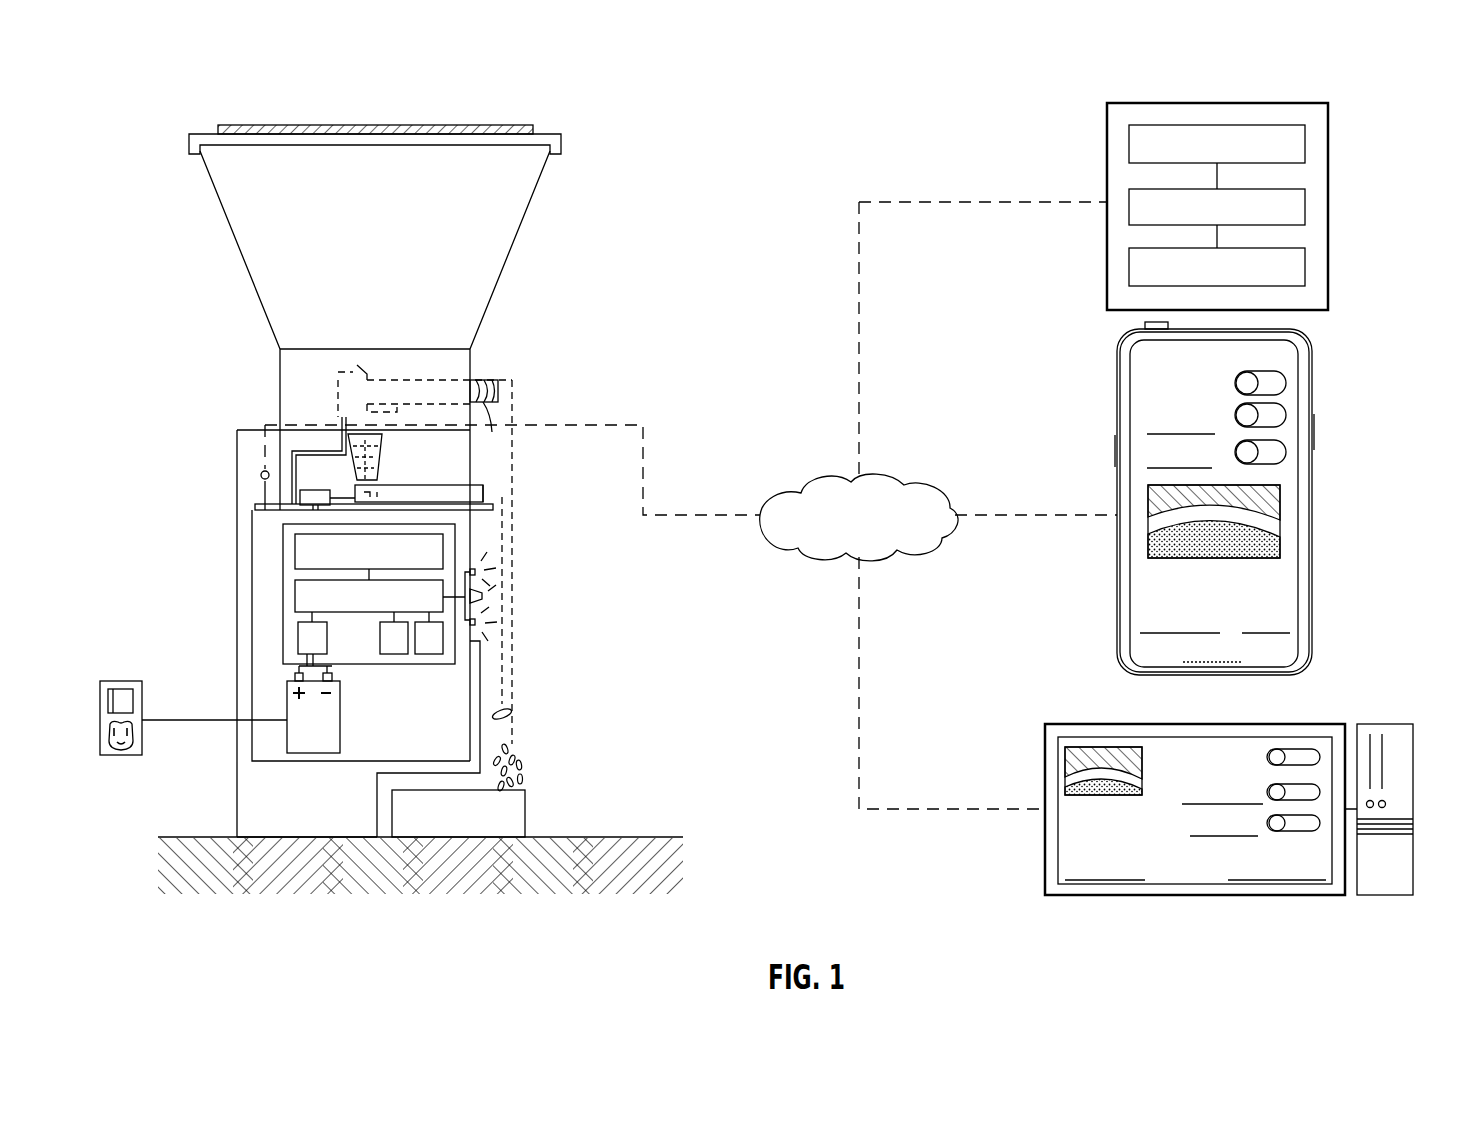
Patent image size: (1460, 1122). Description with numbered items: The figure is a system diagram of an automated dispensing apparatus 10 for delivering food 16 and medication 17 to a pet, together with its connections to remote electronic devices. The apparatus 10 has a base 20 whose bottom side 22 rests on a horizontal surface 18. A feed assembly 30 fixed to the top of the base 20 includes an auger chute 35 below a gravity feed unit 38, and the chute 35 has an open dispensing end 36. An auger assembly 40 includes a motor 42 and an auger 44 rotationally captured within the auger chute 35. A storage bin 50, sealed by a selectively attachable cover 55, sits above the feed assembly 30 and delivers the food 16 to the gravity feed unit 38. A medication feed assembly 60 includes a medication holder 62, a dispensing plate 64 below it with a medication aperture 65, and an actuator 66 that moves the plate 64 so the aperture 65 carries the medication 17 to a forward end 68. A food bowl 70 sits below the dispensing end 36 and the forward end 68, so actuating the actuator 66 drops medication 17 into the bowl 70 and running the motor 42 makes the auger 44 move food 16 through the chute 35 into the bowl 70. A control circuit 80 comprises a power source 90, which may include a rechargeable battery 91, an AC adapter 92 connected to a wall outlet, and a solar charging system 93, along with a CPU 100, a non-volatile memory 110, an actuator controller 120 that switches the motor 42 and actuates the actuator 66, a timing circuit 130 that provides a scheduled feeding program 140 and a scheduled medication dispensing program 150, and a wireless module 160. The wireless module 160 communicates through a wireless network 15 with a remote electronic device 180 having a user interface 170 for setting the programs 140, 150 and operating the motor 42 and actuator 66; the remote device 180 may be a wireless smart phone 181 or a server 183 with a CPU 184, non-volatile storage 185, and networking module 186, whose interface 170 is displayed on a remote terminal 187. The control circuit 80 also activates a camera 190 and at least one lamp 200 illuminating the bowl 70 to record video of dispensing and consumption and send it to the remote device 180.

The automated dispensing apparatus 10 is at (169, 92).
The wireless network 15 is at (832, 473).
The food 16 is at (507, 740).
The medication 17 is at (505, 703).
The horizontal surface 18 is at (192, 829).
The base 20 is at (229, 763).
The bottom side 22 is at (305, 831).
The feed assembly 30 is at (487, 313).
The auger chute 35 is at (457, 369).
The open dispensing end 36 is at (499, 374).
The gravity feed unit 38 is at (349, 357).
The auger assembly 40 is at (321, 366).
The motor 42 is at (335, 407).
The auger 44 is at (494, 435).
The storage bin 50 is at (202, 171).
The cover 55 is at (542, 129).
The medication feed assembly 60 is at (477, 482).
The medication holder 62 is at (372, 446).
The dispensing plate 64 is at (380, 477).
The medication aperture 65 is at (347, 487).
The actuator 66 is at (292, 492).
The forward end 68 is at (467, 469).
The food bowl 70 is at (517, 810).
The control circuit 80 is at (275, 556).
The power source 90 is at (144, 709).
The rechargeable battery 91 is at (279, 705).
The AC adapter 92 is at (114, 689).
The solar charging system 93 is at (262, 119).
The CPU 100 is at (287, 589).
The non-volatile memory 110 is at (287, 541).
The actuator controller 120 is at (435, 633).
The timing circuit 130 is at (386, 646).
The scheduled feeding program 140 is at (1241, 720).
The scheduled medication dispensing program 150 is at (1199, 838).
The wireless module 160 is at (290, 627).
The user interface 170 is at (1261, 375).
The remote electronic device 180 is at (1193, 621).
The wireless smart phone 181 is at (1275, 490).
The server 183 is at (1165, 93).
The CPU 184 is at (1299, 195).
The non-volatile storage 185 is at (1299, 254).
The networking module 186 is at (1299, 132).
The remote terminal 187 is at (1182, 804).
The camera 190 is at (475, 589).
The lamp 200 is at (468, 562).